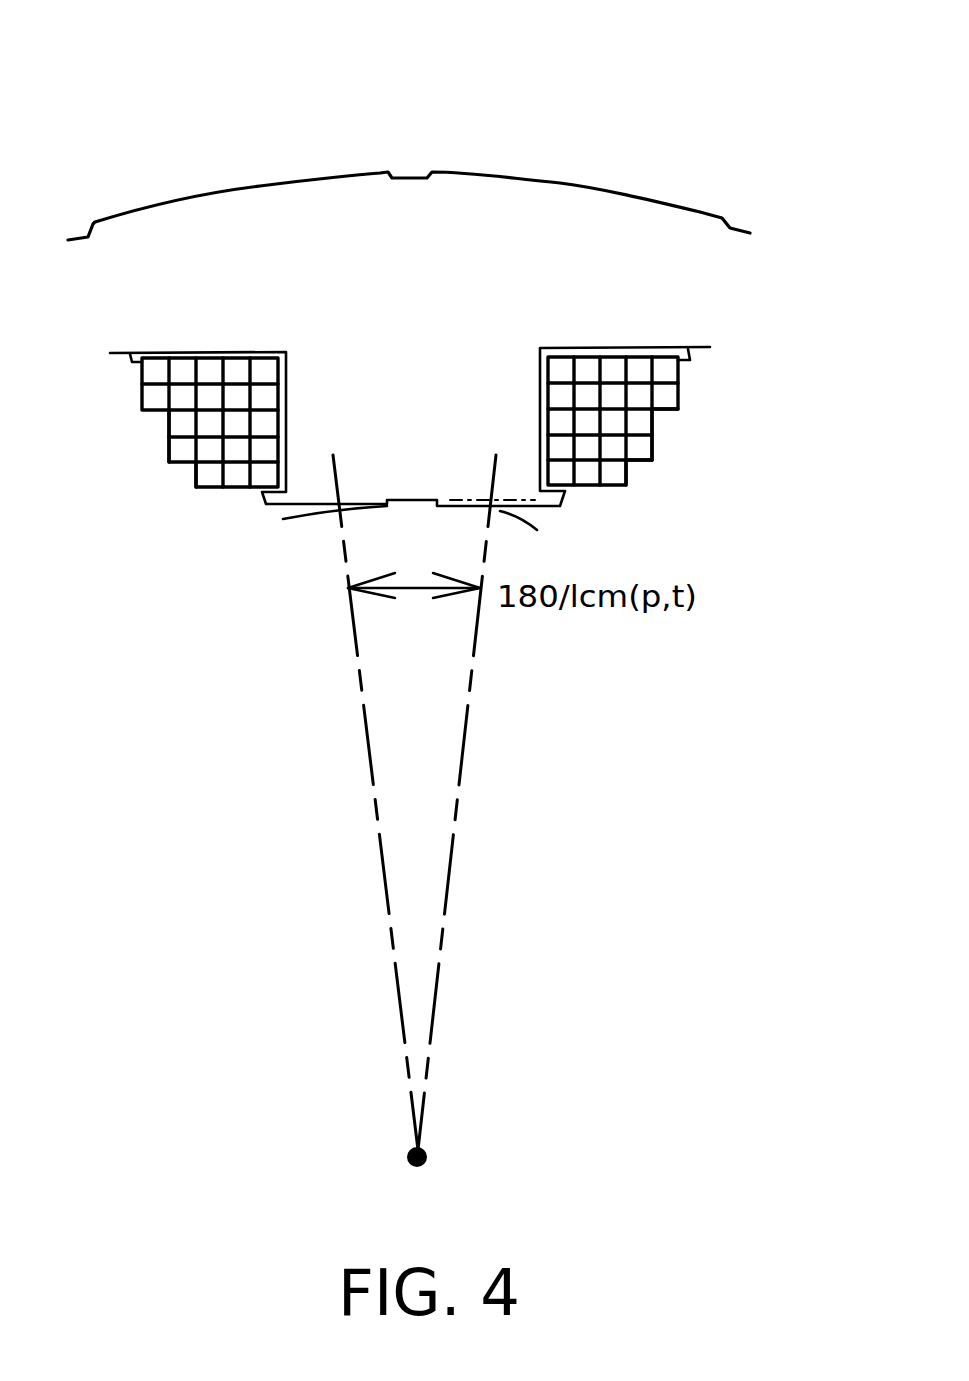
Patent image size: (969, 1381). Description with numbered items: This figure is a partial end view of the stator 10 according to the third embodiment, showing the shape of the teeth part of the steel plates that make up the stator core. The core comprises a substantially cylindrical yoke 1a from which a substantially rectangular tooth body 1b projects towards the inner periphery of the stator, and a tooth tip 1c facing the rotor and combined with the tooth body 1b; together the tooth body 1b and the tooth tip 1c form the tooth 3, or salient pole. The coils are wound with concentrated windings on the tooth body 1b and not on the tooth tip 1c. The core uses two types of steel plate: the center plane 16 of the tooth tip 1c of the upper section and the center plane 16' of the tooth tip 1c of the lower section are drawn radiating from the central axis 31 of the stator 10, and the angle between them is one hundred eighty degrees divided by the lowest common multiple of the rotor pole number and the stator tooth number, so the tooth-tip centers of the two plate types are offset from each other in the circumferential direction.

The stator 10 is at (578, 176).
The tooth 3 is at (387, 404).
The yoke 1a is at (635, 235).
The tooth body 1b is at (332, 422).
The tooth tip 1c is at (537, 530).
The center plane of the tooth tip of the upper section 16 is at (481, 802).
The center plane of the tooth tip of the lower section 16' is at (340, 802).
The central axis 31 is at (428, 1148).